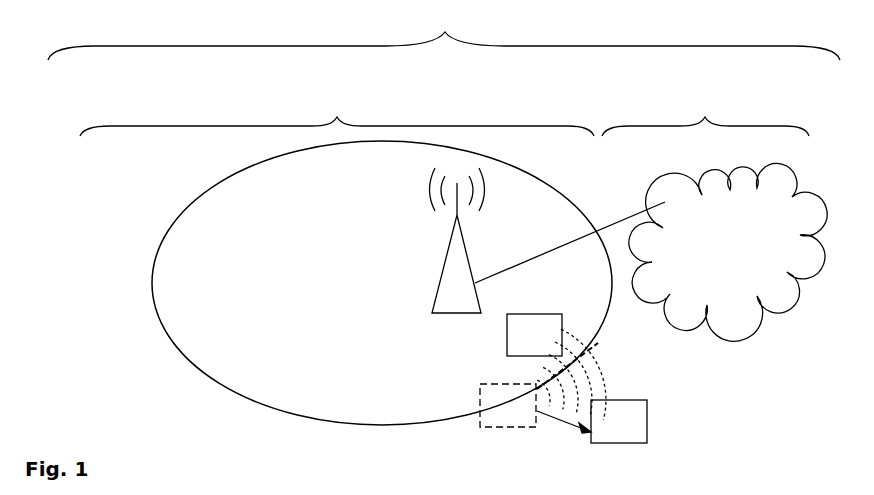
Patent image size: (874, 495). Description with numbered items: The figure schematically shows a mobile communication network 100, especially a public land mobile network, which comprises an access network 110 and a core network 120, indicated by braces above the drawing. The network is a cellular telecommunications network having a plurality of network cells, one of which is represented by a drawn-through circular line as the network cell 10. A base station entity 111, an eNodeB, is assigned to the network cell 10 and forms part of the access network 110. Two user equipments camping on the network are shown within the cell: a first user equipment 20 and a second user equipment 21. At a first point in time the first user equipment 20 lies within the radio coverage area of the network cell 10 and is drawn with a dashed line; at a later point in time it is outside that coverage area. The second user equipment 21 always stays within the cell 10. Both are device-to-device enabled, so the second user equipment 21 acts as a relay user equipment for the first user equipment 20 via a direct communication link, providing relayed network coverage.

The mobile communication network 100 is at (444, 33).
The access network 110 is at (337, 114).
The core network 120 is at (714, 216).
The network cell 10 is at (249, 402).
The base station entity 111 is at (548, 240).
The second user equipment 21 is at (534, 335).
The first user equipment 20 is at (563, 386).